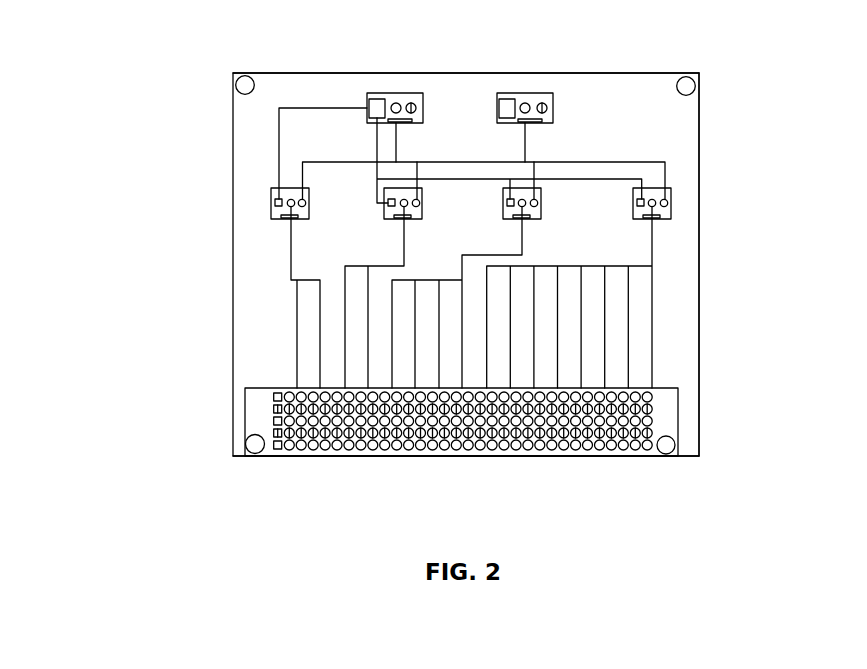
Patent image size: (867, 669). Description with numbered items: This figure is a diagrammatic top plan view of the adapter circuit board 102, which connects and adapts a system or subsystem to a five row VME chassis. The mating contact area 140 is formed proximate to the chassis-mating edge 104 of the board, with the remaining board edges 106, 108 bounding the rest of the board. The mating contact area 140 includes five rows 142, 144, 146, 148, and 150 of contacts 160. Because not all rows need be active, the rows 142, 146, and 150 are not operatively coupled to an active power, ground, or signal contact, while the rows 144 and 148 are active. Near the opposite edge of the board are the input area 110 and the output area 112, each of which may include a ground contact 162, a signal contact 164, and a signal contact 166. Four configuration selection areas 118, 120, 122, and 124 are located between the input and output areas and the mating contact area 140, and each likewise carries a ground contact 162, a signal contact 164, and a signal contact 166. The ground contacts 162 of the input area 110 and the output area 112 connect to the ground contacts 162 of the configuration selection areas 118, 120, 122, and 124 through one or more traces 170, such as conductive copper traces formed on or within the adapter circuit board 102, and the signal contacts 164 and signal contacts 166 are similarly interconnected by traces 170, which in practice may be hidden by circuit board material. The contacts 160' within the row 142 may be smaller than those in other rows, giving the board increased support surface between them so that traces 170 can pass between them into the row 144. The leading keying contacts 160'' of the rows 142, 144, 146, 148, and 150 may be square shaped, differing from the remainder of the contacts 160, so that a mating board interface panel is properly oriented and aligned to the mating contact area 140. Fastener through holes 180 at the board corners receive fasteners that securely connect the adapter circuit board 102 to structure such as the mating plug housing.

The adapter circuit board 102 is at (134, 60).
The chassis-mating edge 104 is at (240, 456).
The top edge of board 106 is at (640, 73).
The right edge of board 108 is at (699, 240).
The input area 110 is at (378, 95).
The output area 112 is at (510, 95).
The configuration selection area 118 is at (275, 217).
The configuration selection area 120 is at (421, 198).
The configuration selection area 122 is at (536, 198).
The configuration selection area 124 is at (673, 191).
The mating contact area 140 is at (670, 427).
The row of contacts 142 is at (273, 397).
The row of contacts 144 is at (273, 409).
The row of contacts 146 is at (273, 421).
The row of contacts 148 is at (273, 433).
The row of contacts 150 is at (277, 450).
The contacts 160 is at (468, 458).
The smaller contacts 160' is at (465, 369).
The leading keying contacts 160'' is at (462, 498).
The ground contact 162 is at (414, 97).
The signal contact 164 is at (395, 98).
The signal contact 166 is at (377, 97).
The traces 170 is at (722, 277).
The fastener through holes 180 is at (244, 77).